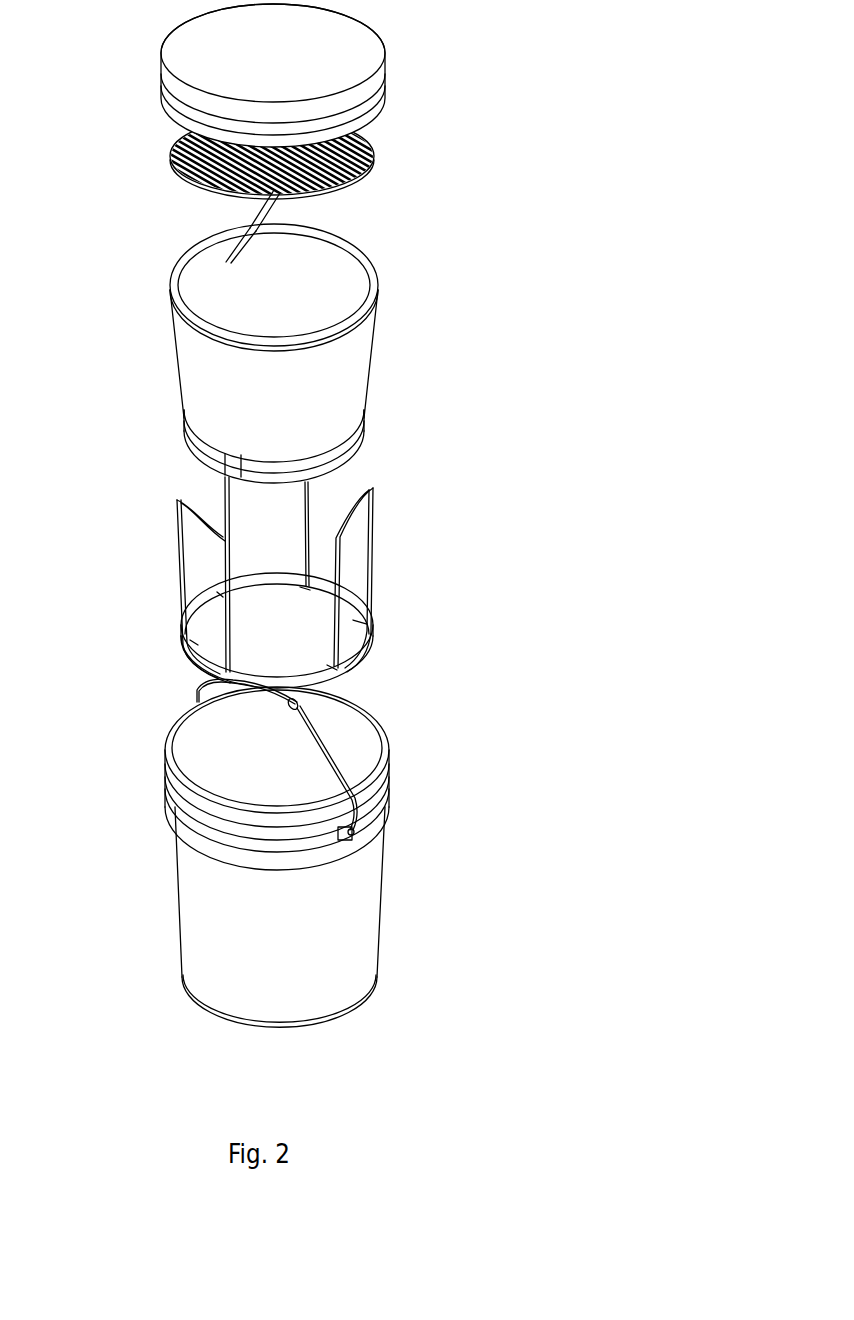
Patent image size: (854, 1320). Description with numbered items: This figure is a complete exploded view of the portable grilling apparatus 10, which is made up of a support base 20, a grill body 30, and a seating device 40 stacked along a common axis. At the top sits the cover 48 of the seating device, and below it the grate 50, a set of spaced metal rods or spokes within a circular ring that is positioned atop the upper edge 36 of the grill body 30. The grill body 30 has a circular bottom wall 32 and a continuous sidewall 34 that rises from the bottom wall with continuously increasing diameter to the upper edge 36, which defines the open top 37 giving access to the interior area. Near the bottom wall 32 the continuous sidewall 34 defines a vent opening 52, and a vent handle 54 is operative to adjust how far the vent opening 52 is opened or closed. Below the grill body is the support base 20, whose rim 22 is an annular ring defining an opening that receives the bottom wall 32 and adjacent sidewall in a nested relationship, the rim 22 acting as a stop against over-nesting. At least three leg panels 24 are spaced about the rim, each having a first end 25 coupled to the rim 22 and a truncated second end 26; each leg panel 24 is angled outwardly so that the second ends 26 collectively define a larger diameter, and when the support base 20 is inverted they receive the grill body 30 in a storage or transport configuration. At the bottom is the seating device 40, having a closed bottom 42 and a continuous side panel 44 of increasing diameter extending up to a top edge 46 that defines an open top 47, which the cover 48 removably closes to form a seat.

The portable grilling apparatus 10 is at (566, 136).
The support base 20 is at (301, 586).
The rim 22 is at (365, 652).
The leg panel 24 is at (306, 573).
The first end 25 is at (162, 671).
The second end 26 is at (403, 503).
The grill body 30 is at (315, 353).
The bottom wall 32 is at (355, 447).
The continuous sidewall 34 is at (308, 410).
The upper edge 36 is at (378, 278).
The open top 37 is at (325, 260).
The seating device 40 is at (353, 884).
The bottom 42 is at (340, 1015).
The continuous side panel 44 is at (318, 954).
The top edge 46 is at (385, 738).
The open top 47 is at (335, 710).
The cover 48 is at (345, 43).
The grate 50 is at (355, 165).
The vent opening 52 is at (207, 450).
The vent handle 54 is at (247, 212).